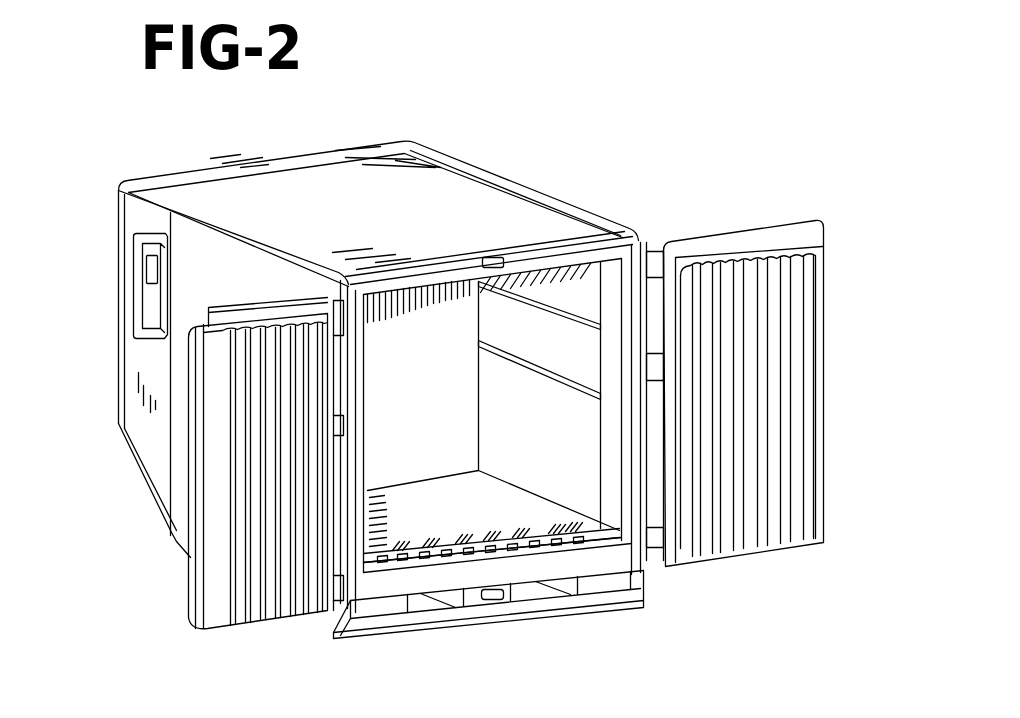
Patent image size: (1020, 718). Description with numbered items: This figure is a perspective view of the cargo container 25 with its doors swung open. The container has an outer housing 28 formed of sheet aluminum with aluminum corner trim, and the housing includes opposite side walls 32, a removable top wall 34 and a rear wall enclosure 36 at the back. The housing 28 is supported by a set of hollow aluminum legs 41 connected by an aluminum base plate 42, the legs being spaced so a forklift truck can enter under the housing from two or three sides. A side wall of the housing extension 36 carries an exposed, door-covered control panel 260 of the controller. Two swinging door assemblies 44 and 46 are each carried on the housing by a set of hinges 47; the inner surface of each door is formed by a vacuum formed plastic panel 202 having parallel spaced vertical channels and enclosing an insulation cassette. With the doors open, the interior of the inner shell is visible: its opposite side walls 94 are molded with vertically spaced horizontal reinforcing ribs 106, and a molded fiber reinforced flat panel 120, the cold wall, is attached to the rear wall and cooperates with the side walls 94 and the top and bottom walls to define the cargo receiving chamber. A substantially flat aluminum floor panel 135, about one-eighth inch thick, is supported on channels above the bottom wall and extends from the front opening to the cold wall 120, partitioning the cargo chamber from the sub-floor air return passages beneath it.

The cargo container 25 is at (567, 184).
The outer housing 28 is at (371, 197).
The removable top wall 34 is at (462, 183).
The side walls 32 is at (184, 240).
The rear wall enclosure 36 is at (137, 358).
The control panel 260 is at (152, 278).
The door assembly 46 is at (188, 598).
The panel 202 is at (268, 320).
The door assembly 44 is at (763, 226).
The hinges 47 is at (652, 250).
The flat panel 120 is at (442, 327).
The reinforcing ribs 106 is at (573, 322).
The side walls 94 is at (523, 457).
The floor panel 135 is at (492, 502).
The base plate 42 is at (503, 613).
The legs 41 is at (480, 603).